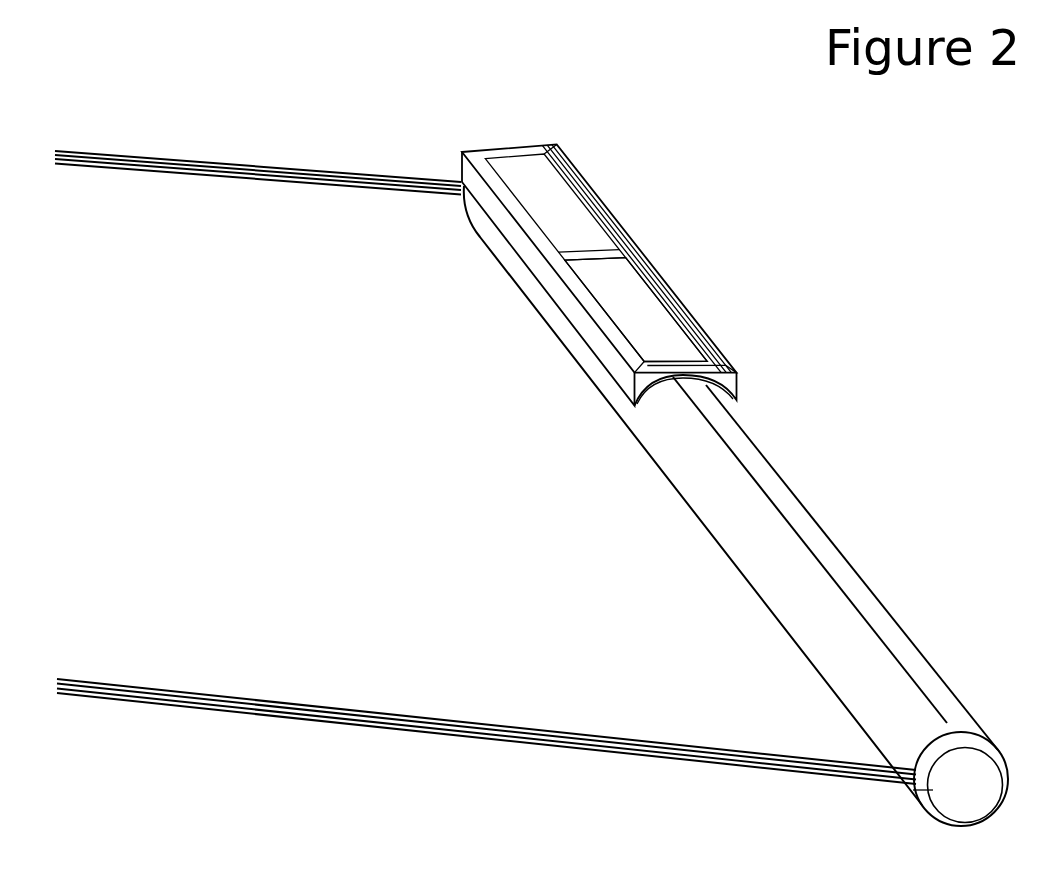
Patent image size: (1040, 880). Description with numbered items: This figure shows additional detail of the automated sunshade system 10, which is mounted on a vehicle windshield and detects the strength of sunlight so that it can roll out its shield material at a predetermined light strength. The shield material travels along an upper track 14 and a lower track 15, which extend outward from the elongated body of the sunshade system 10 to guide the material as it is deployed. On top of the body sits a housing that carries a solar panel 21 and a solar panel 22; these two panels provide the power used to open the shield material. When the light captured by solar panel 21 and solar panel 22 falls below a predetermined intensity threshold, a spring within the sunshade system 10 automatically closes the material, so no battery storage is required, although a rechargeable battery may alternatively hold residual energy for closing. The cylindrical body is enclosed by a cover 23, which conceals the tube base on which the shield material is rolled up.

The automated sunshade system 10 is at (703, 523).
The upper track 14 is at (147, 166).
The lower track 15 is at (159, 688).
The solar panel 21 is at (563, 200).
The solar panel 22 is at (655, 304).
The cover 23 is at (859, 578).